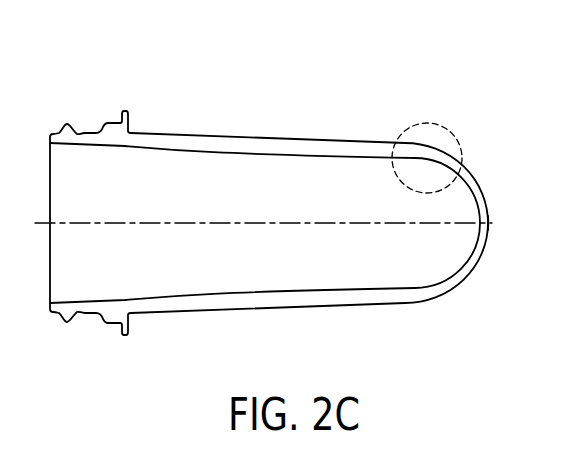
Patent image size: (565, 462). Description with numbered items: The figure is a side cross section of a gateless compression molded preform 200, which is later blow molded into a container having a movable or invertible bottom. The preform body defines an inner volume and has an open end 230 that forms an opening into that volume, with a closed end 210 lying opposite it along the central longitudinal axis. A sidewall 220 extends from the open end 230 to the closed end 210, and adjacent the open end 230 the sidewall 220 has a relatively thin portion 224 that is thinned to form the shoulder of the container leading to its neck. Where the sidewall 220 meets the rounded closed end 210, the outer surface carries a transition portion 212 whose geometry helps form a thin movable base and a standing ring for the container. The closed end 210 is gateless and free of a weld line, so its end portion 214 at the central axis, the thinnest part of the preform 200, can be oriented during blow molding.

The compression molded preform 200 is at (293, 186).
The closed end 210 is at (486, 314).
The transition portion 212 is at (453, 128).
The end portion 214 is at (489, 223).
The sidewall 220 is at (297, 139).
The relatively thin portion 224 is at (174, 143).
The open end 230 is at (80, 131).